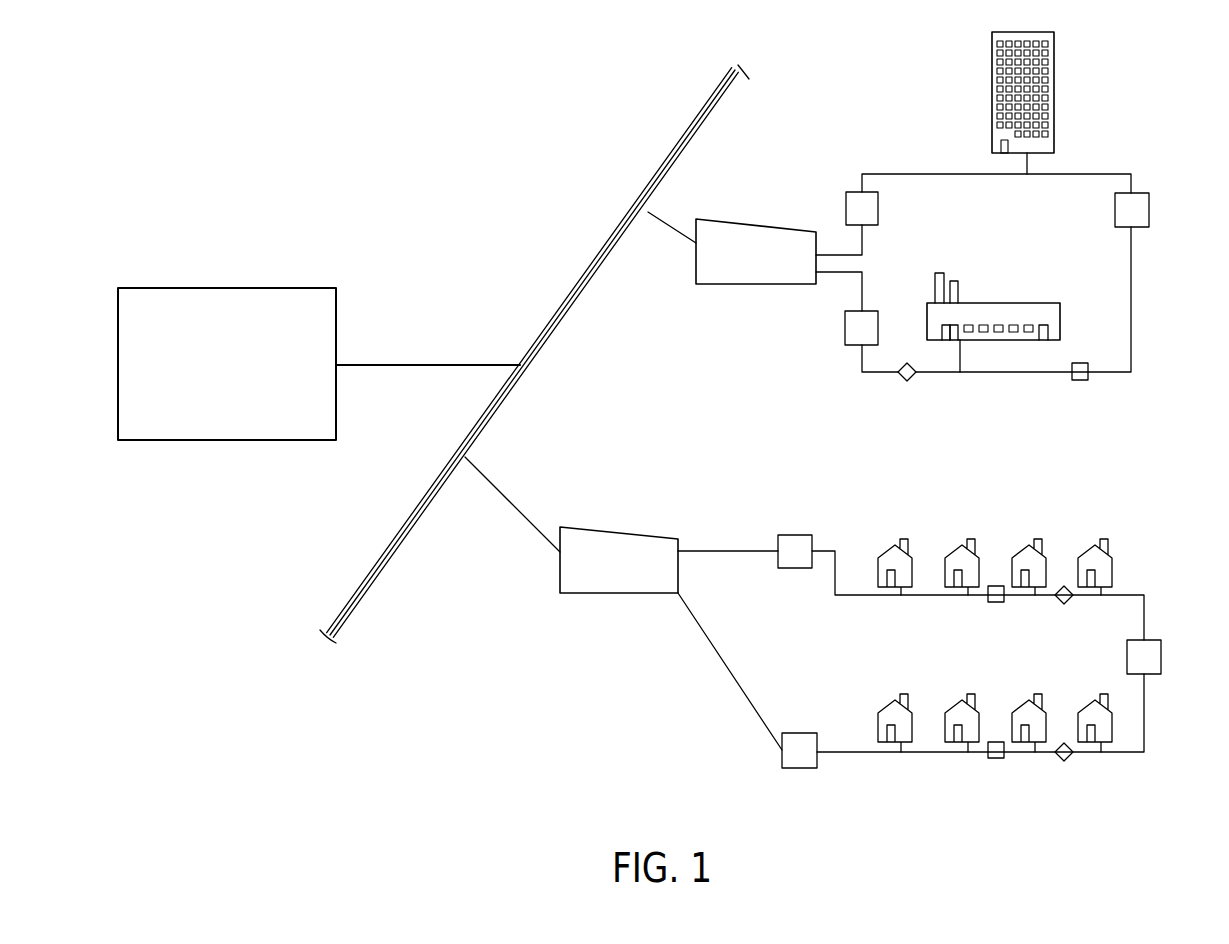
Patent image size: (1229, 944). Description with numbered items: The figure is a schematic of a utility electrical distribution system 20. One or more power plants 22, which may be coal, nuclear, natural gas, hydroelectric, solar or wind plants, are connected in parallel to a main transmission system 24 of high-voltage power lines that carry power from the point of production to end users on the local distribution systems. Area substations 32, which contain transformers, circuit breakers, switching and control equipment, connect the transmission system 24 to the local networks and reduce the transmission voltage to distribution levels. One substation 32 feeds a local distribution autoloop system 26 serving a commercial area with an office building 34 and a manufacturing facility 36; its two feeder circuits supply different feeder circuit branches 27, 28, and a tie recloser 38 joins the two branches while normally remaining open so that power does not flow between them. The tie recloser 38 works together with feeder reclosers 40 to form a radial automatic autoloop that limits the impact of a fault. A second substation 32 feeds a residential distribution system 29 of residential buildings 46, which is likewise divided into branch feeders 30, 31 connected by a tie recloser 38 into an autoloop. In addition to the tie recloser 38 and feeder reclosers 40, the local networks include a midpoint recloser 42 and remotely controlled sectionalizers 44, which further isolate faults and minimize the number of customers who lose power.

The utility electrical distribution system 20 is at (509, 106).
The power plant 22 is at (268, 288).
The main transmission system 24 is at (582, 284).
The local distribution autoloop system 26 is at (897, 117).
The feeder circuit branch 27 is at (945, 188).
The feeder circuit branch 28 is at (1114, 398).
The residential distribution system 29 is at (868, 507).
The branch feeder 30 is at (877, 623).
The branch feeder 31 is at (723, 774).
The area substation 32 is at (727, 220).
The office building 34 is at (1056, 132).
The manufacturing facility 36 is at (1031, 303).
The tie recloser 38 is at (1150, 207).
The feeder recloser 40 is at (846, 208).
The midpoint recloser 42 is at (1078, 380).
The remotely controlled sectionalizer 44 is at (905, 382).
The residential building 46 is at (1037, 539).